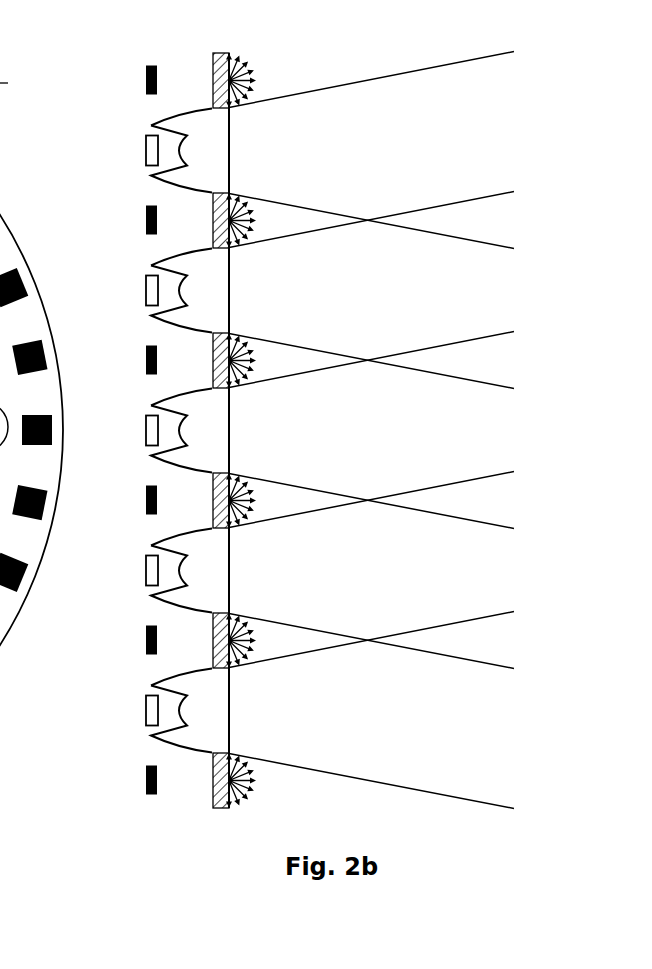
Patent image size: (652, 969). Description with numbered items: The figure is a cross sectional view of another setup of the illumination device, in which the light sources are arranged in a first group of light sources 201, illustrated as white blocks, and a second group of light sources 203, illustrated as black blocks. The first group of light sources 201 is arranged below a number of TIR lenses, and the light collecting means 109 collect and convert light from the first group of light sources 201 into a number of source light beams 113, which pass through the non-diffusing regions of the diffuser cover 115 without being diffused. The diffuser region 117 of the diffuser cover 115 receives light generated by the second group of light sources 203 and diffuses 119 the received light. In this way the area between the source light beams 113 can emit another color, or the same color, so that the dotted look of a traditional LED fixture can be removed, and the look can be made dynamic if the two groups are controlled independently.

The light collecting means 109 is at (213, 712).
The source light beams 113 is at (442, 571).
The diffuser cover 115 is at (220, 826).
The diffuser region 117 is at (212, 649).
The diffused light 119 is at (262, 505).
The first group of light sources 201 is at (145, 297).
The second group of light sources 203 is at (146, 93).